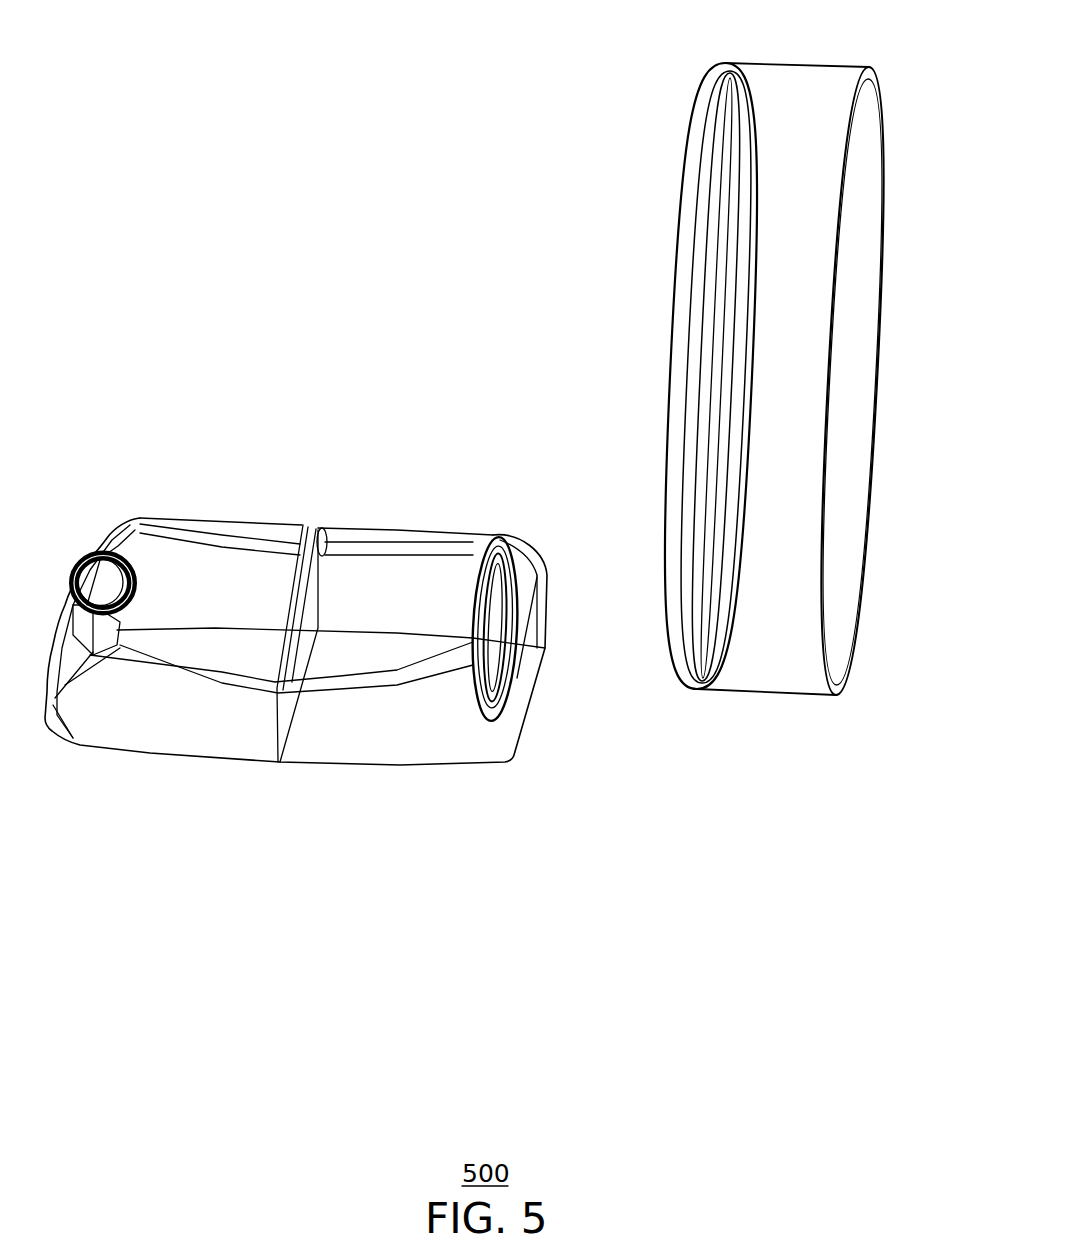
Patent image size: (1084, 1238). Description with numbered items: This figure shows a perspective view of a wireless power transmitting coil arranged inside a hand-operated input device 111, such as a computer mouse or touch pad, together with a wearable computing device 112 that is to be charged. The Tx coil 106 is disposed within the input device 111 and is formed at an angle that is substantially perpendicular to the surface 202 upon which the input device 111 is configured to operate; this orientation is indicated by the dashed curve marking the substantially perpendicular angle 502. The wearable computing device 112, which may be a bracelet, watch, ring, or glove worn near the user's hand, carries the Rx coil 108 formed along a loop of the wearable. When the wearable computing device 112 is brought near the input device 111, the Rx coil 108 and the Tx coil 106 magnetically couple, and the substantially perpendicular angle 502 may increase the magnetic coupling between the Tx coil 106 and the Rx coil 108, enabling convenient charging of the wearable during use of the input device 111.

The input device 111 is at (207, 583).
The Tx coil 106 is at (492, 533).
The substantially perpendicular angle 502 is at (517, 675).
The surface 202 is at (850, 722).
The Rx coil 108 is at (757, 218).
The wearable computing device 112 is at (805, 80).